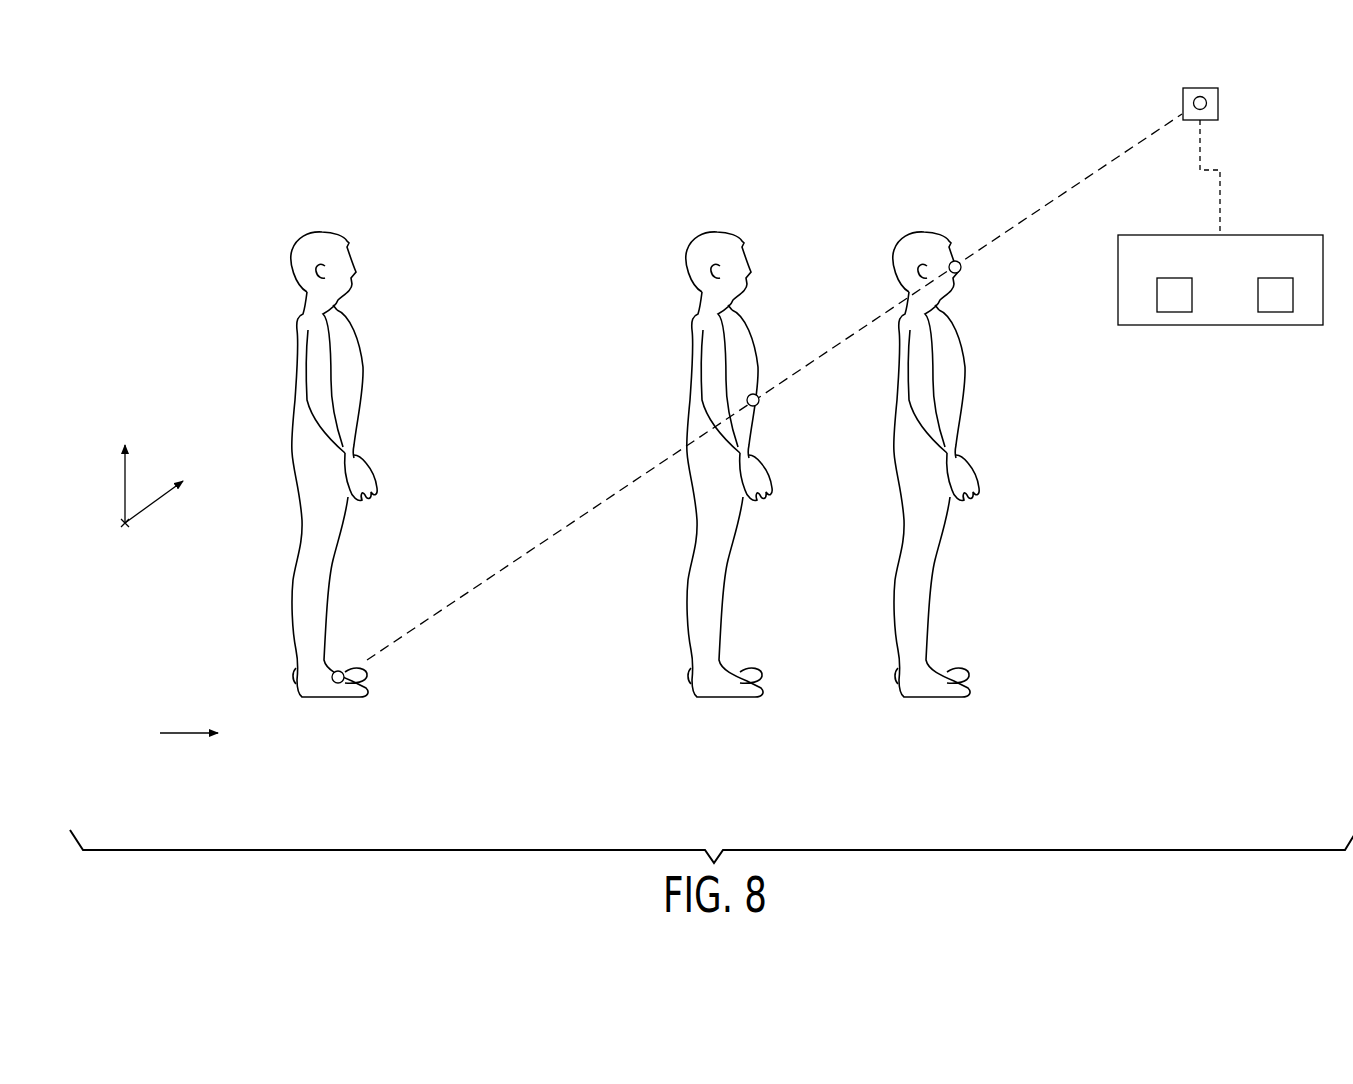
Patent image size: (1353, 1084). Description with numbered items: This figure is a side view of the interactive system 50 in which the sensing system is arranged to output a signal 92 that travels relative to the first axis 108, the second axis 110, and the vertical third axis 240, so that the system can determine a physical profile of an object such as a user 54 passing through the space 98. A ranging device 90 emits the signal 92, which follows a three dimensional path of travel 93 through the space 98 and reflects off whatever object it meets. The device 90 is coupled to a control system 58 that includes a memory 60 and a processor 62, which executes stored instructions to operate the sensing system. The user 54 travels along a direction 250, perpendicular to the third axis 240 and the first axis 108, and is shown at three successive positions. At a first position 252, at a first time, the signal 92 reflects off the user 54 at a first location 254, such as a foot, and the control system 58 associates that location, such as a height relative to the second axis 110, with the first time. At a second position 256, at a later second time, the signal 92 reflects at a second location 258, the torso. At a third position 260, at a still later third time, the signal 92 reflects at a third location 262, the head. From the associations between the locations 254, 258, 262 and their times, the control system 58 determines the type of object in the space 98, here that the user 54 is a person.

The interactive system 50 is at (1015, 175).
The user 54 is at (655, 487).
The control system 58 is at (1275, 235).
The memory 60 is at (1175, 312).
The processor 62 is at (1277, 312).
The device 90 is at (1220, 113).
The signal 92 is at (1115, 160).
The path of travel 93 is at (550, 578).
The space 98 is at (987, 353).
The first axis 108 is at (122, 528).
The second axis 110 is at (150, 505).
The third axis 240 is at (122, 490).
The direction 250 is at (183, 735).
The first position 252 is at (377, 712).
The first location 254 is at (340, 670).
The second position 256 is at (772, 712).
The second location 258 is at (760, 407).
The third position 260 is at (993, 712).
The third location 262 is at (958, 260).